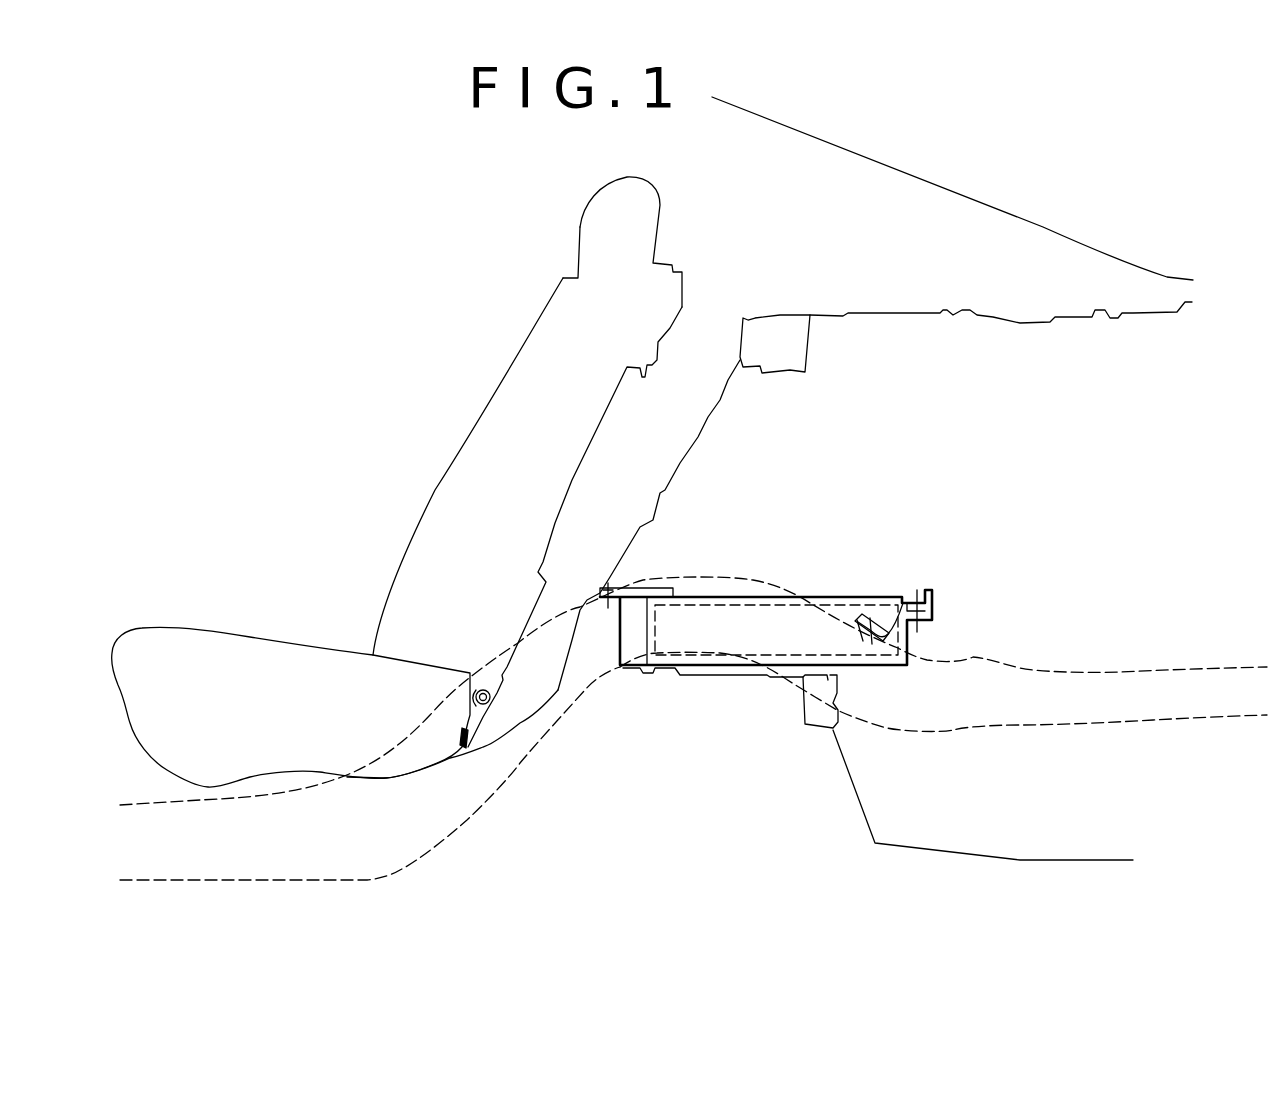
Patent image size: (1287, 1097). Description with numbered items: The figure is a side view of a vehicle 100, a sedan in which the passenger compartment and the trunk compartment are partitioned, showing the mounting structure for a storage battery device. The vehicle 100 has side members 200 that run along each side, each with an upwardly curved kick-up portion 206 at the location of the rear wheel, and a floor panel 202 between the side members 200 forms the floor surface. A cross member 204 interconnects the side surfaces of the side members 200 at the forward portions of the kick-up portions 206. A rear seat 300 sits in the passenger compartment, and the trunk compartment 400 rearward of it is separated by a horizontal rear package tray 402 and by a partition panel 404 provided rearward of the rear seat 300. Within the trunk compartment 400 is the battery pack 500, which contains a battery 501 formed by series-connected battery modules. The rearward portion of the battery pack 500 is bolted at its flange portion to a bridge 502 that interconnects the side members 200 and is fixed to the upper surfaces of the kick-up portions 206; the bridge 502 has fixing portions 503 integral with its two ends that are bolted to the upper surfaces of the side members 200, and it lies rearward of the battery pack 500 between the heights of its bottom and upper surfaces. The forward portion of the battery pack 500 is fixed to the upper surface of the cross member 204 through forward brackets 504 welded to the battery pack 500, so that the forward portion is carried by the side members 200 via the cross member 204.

The vehicle 100 is at (392, 210).
The side member 200 is at (1042, 672).
The floor panel 202 is at (538, 712).
The cross member 204 is at (623, 645).
The kick-up portion 206 is at (753, 580).
The rear seat 300 is at (493, 397).
The trunk compartment 400 is at (1092, 419).
The rear package tray 402 is at (900, 313).
The partition panel 404 is at (708, 415).
The battery pack 500 is at (850, 593).
The battery 501 is at (780, 600).
The bridge 502 is at (933, 598).
The fixing portion 503 is at (890, 603).
The forward bracket 504 is at (613, 583).